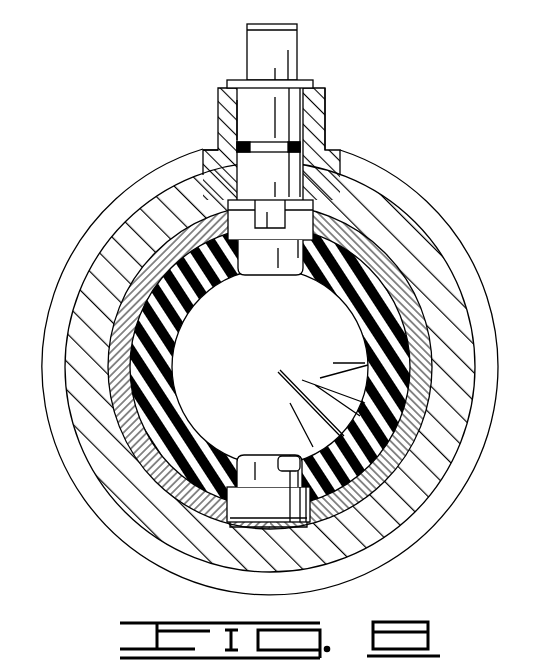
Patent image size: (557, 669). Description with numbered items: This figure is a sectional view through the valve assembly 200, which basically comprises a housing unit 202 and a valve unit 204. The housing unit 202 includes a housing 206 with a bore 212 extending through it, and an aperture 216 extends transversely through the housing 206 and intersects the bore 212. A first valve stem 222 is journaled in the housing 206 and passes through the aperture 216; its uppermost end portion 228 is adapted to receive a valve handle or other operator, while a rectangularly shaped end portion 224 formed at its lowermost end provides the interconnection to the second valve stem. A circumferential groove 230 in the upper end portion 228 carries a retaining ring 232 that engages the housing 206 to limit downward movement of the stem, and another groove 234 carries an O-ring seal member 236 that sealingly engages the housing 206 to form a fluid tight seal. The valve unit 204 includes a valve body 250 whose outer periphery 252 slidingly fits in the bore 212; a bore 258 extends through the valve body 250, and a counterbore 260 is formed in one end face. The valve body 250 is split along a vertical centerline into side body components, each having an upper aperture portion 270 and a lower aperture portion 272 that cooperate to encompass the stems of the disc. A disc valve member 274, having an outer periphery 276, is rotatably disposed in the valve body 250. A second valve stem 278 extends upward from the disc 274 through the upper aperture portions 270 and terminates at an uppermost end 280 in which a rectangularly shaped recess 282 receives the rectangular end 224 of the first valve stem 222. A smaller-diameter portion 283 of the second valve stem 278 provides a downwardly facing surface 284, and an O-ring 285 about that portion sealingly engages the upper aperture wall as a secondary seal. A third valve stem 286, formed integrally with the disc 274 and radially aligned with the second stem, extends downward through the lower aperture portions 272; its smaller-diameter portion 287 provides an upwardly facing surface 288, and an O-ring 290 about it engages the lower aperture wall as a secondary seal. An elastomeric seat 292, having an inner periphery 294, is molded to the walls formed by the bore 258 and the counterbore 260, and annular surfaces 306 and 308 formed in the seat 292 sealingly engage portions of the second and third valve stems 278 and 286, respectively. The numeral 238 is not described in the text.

The valve assembly 200 is at (305, 48).
The housing unit 202 is at (325, 100).
The valve unit 204 is at (417, 267).
The housing 206 is at (312, 122).
The bore 212 is at (170, 555).
The aperture 216 is at (242, 106).
The first valve stem 222 is at (247, 97).
The rectangularly shaped end portion 224 is at (203, 146).
The uppermost end portion 228 is at (267, 37).
The circumferential groove 230 is at (261, 83).
The retaining ring 232 is at (307, 82).
The groove 234 is at (262, 142).
The O-ring seal member 236 is at (237, 142).
The housing portion 238 is at (7, 477).
The valve body 250 is at (120, 397).
The outer periphery 252 is at (150, 492).
The bore 258 is at (445, 421).
The counterbore 260 is at (7, 510).
The upper aperture portion 270 is at (212, 212).
The lower aperture portion 272 is at (230, 507).
The disc valve member 274 is at (433, 332).
The outer periphery 276 is at (140, 360).
The second valve stem 278 is at (313, 210).
The uppermost end 280 is at (305, 202).
The rectangularly shaped recess 282 is at (267, 222).
The portion 283 is at (278, 268).
The downwardly facing surface 284 is at (253, 275).
The O-ring 285 is at (228, 212).
The third valve stem 286 is at (278, 508).
The portion 287 is at (255, 468).
The upwardly facing surface 288 is at (245, 482).
The O-ring 290 is at (195, 558).
The elastomeric seat 292 is at (148, 370).
The inner periphery 294 is at (364, 340).
The annular surface 306 is at (298, 258).
The annular surface 308 is at (288, 458).